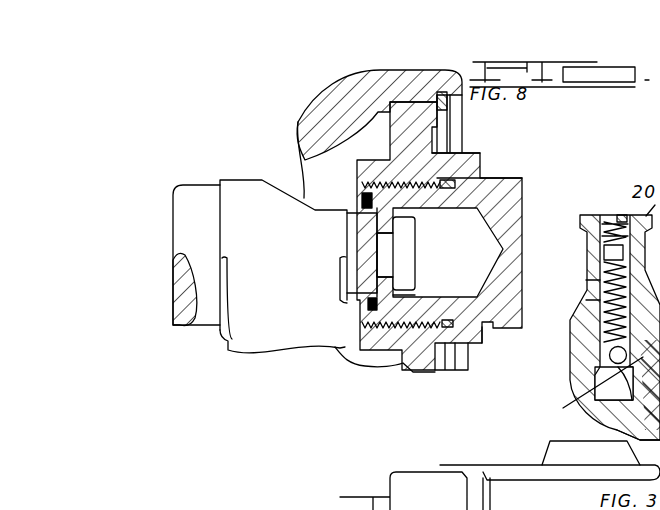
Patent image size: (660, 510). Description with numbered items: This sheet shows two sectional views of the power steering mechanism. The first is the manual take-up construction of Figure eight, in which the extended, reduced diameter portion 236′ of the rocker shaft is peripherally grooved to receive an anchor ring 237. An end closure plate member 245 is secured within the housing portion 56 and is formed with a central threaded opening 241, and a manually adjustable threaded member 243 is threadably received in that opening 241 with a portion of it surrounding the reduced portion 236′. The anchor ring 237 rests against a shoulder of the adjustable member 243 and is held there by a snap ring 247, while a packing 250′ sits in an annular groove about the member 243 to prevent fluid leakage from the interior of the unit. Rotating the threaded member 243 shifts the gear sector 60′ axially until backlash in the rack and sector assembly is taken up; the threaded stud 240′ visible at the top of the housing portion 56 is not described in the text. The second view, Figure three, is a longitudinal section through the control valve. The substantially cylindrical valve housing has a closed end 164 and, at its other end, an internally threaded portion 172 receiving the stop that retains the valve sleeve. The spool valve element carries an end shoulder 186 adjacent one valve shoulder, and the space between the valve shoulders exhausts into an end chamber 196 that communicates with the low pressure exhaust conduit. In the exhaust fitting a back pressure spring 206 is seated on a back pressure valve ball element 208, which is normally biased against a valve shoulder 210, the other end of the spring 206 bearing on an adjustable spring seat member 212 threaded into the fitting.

In FIG. 8, the housing portion 56 is at (338, 93).
In FIG. 8, the stud 240′ is at (423, 141).
In FIG. 8, the central threaded opening 241 is at (450, 178).
In FIG. 8, the manually adjustable threaded member 243 is at (503, 193).
In FIG. 8, the snap ring 247 is at (355, 204).
In FIG. 8, the gear sector 60′ is at (293, 254).
In FIG. 8, the anchor ring 237 is at (429, 252).
In FIG. 8, the extended portion of the rocker arm 236′ is at (398, 249).
In FIG. 8, the end closure plate member 245 is at (393, 297).
In FIG. 8, the packing 250′ is at (445, 329).
In FIG. 3, the adjustable spring seat member 212 is at (617, 215).
In FIG. 3, the back pressure spring 206 is at (603, 257).
In FIG. 3, the back pressure valve ball element 208 is at (609, 353).
In FIG. 3, the end chamber 196 is at (600, 378).
In FIG. 3, the valve shoulder 210 is at (585, 386).
In FIG. 3, the end shoulder 186 is at (623, 420).
In FIG. 3, the closed end 164 is at (610, 425).
In FIG. 3, the internally threaded portion 172 is at (550, 460).